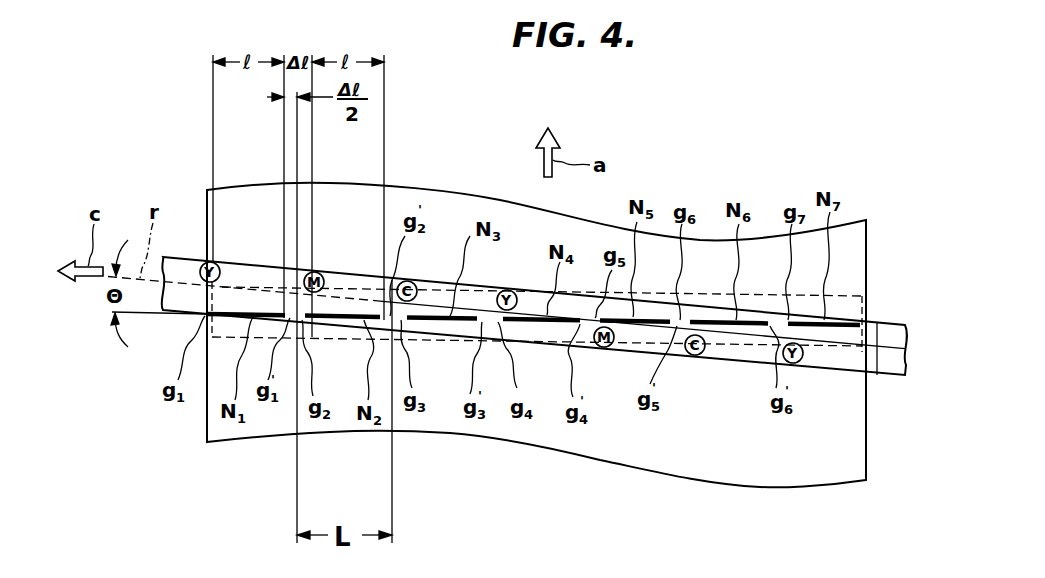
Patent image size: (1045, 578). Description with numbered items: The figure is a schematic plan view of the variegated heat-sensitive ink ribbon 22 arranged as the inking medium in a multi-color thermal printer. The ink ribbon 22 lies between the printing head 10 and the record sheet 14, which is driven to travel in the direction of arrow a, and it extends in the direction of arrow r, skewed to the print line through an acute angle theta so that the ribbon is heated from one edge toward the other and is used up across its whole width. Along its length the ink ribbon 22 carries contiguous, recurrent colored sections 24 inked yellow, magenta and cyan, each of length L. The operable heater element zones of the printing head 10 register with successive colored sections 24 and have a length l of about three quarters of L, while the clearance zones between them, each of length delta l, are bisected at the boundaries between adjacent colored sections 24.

The printing head 10 is at (843, 296).
The record sheet 14 is at (831, 466).
The ink ribbon 22 is at (889, 380).
The colored sections 24 is at (703, 357).